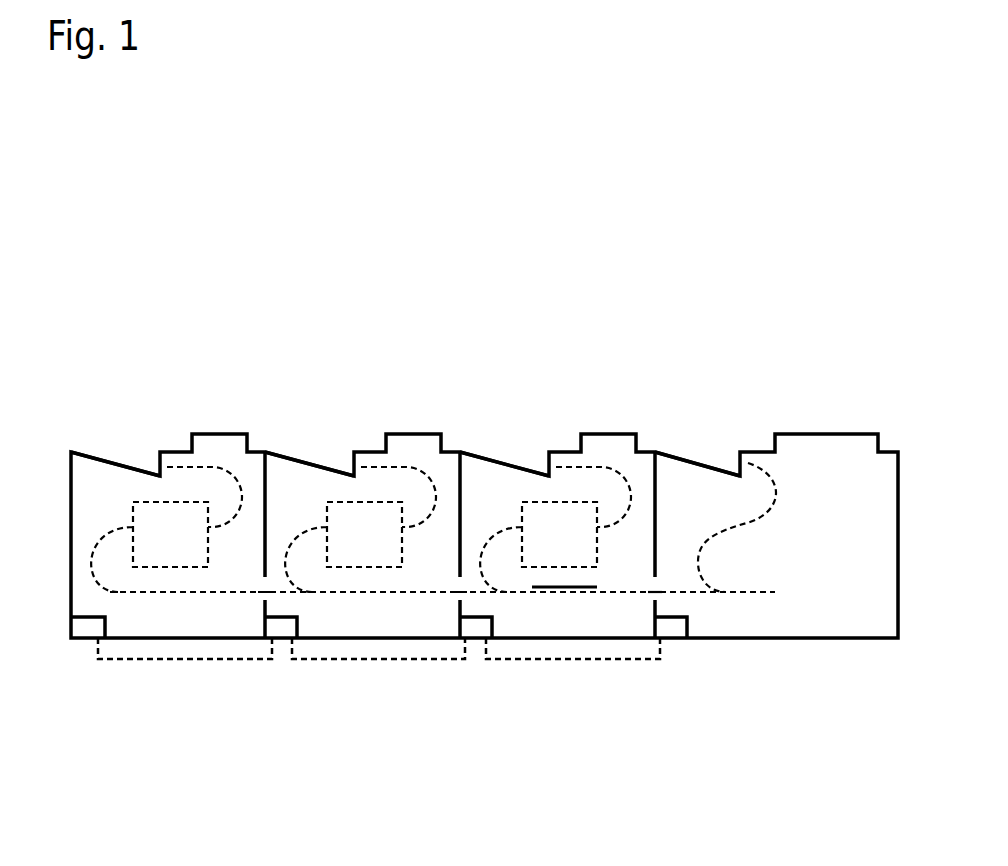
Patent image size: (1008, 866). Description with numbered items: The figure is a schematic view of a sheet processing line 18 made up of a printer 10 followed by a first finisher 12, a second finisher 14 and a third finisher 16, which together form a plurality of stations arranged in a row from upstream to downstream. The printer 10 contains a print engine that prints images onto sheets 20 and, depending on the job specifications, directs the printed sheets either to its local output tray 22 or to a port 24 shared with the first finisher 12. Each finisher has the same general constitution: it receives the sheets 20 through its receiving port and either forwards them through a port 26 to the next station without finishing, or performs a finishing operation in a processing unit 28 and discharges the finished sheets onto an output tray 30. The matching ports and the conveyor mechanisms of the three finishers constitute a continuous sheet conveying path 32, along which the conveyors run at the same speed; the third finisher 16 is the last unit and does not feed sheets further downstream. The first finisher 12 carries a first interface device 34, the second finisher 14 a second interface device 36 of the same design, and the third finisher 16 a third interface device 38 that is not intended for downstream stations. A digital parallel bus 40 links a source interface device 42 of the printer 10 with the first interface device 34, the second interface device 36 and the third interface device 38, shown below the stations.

The printer 10 is at (783, 371).
The first finisher 12 is at (574, 371).
The second finisher 14 is at (364, 371).
The third finisher 16 is at (178, 371).
The sheet processing line 18 is at (494, 188).
The sheets 20 is at (557, 587).
The local output tray 22 is at (694, 463).
The port 24 is at (653, 591).
The port 26 is at (265, 592).
The processing unit 28 is at (147, 518).
The output tray 30 is at (110, 463).
The continuous sheet conveying path 32 is at (367, 592).
The first interface device 34 is at (475, 627).
The second interface device 36 is at (278, 627).
The third interface device 38 is at (87, 627).
The digital parallel bus 40 is at (630, 668).
The source interface device 42 is at (667, 627).